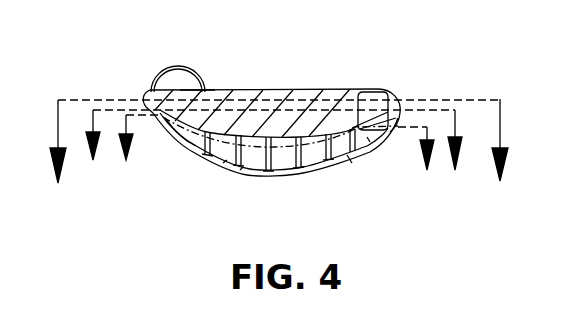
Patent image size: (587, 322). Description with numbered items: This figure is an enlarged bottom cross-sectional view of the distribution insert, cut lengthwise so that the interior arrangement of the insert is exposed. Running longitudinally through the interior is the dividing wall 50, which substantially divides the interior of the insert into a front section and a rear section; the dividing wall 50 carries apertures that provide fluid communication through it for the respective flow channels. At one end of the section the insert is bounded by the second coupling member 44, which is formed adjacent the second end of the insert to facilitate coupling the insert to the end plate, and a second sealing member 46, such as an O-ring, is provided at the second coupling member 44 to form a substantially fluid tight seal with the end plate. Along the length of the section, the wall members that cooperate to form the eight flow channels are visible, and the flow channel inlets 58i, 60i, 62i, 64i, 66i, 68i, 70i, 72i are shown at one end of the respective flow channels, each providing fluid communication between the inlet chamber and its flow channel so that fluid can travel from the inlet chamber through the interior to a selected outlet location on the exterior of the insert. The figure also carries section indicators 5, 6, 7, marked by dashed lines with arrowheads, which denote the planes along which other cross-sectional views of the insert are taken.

The section line 5- 5 is at (276, 156).
The section line 6- 6 is at (274, 152).
The section line 7- 7 is at (279, 152).
The second coupling member 44 is at (170, 78).
The second sealing member 46 is at (198, 90).
The dividing wall 50 is at (276, 130).
The flow channel inlet 58i is at (187, 137).
The flow channel inlet 60i is at (377, 103).
The flow channel inlet 62i is at (220, 155).
The flow channel inlet 64i is at (379, 139).
The flow channel inlet 66i is at (254, 180).
The flow channel inlet 68i is at (340, 158).
The flow channel inlet 70i is at (285, 163).
The flow channel inlet 72i is at (312, 162).